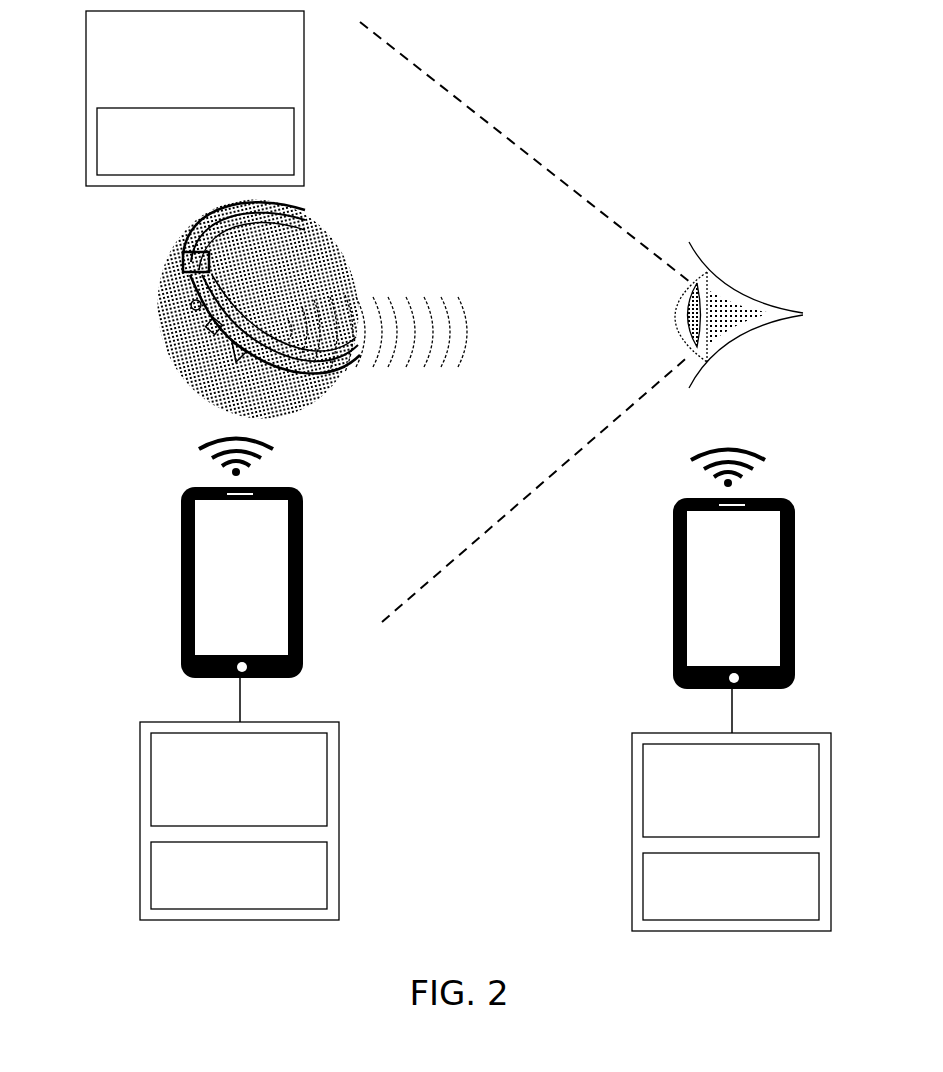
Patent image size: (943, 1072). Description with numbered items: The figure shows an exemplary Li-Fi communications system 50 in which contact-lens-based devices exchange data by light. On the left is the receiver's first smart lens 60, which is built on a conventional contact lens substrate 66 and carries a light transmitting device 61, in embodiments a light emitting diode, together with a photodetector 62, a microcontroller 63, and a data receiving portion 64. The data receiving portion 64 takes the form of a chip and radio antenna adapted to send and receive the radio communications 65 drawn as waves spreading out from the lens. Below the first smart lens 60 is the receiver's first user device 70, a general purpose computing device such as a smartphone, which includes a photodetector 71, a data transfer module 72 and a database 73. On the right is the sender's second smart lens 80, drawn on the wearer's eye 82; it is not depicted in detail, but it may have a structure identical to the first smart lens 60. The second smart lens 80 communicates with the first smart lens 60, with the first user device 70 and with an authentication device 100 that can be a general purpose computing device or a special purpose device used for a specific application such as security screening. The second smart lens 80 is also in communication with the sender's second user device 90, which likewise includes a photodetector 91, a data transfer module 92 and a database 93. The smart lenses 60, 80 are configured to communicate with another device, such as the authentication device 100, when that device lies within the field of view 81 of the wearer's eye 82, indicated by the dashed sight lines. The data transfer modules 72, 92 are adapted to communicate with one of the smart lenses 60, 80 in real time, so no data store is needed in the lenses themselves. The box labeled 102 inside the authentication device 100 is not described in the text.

The Li-Fi communications system 50 is at (650, 83).
The first smart lens 60 is at (160, 272).
The light transmitting device 61 is at (184, 262).
The photodetector 62 is at (190, 305).
The microcontroller 63 is at (205, 327).
The data receiving portion 64 is at (228, 350).
The radio communications 65 is at (367, 300).
The contact lens substrate 66 is at (195, 372).
The first user device 70 is at (202, 680).
The photodetector 71 is at (220, 672).
The data transfer module 72 is at (239, 779).
The database 73 is at (239, 875).
The second smart lens 80 is at (698, 363).
The field of view 81 is at (618, 226).
The wearer's eye 82 is at (745, 273).
The second user device 90 is at (678, 691).
The photodetector 91 is at (712, 684).
The data transfer module 92 is at (731, 790).
The database 93 is at (731, 886).
The authentication device 100 is at (195, 98).
The Li-Fi unit 102 is at (195, 141).